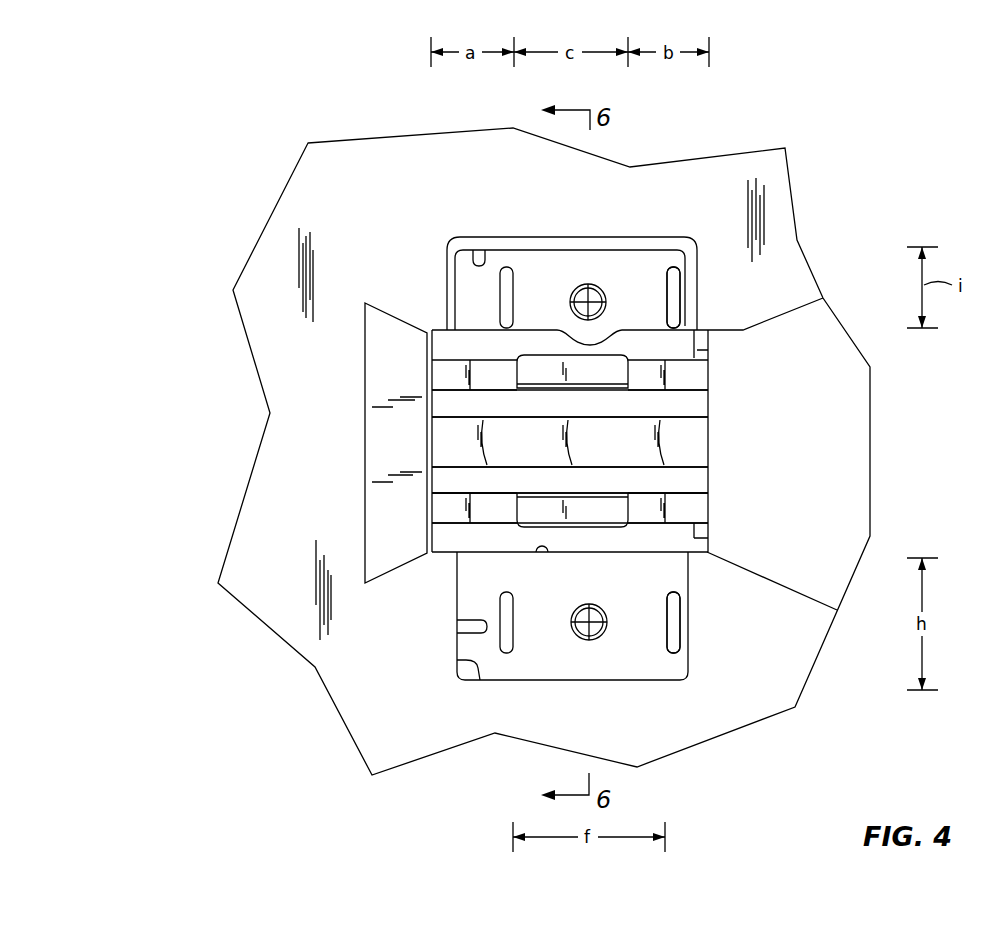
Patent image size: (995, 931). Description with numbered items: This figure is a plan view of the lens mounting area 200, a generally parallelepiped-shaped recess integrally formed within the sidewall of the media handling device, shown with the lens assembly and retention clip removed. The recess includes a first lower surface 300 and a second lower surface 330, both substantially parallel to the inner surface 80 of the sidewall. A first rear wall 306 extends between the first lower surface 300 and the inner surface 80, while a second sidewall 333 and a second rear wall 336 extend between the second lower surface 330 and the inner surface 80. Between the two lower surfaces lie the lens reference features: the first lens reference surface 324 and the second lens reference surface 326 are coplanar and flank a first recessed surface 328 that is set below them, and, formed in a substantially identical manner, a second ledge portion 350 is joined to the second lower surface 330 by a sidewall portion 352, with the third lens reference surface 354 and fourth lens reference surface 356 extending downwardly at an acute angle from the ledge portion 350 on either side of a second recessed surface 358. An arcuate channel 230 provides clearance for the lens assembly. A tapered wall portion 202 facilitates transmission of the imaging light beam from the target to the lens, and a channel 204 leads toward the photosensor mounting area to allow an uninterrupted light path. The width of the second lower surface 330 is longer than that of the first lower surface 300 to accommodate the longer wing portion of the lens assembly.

The inner surface 80 is at (373, 214).
The lens mounting area 200 is at (697, 222).
The tapered wall portion 202 is at (381, 444).
The channel 204 is at (848, 428).
The arcuate channel 230 is at (688, 443).
The first lower surface 300 is at (545, 267).
The first rear wall 306 is at (686, 292).
The first lens reference surface 324 is at (448, 378).
The second lens reference surface 326 is at (698, 378).
The first recessed surface 328 is at (607, 367).
The second lower surface 330 is at (540, 655).
The second sidewall 333 is at (457, 660).
The second rear wall 336 is at (686, 622).
The second ledge portion 350 is at (663, 540).
The sidewall portion 352 is at (547, 557).
The third lens reference surface 354 is at (448, 510).
The fourth lens reference surface 356 is at (698, 510).
The second recessed surface 358 is at (607, 515).